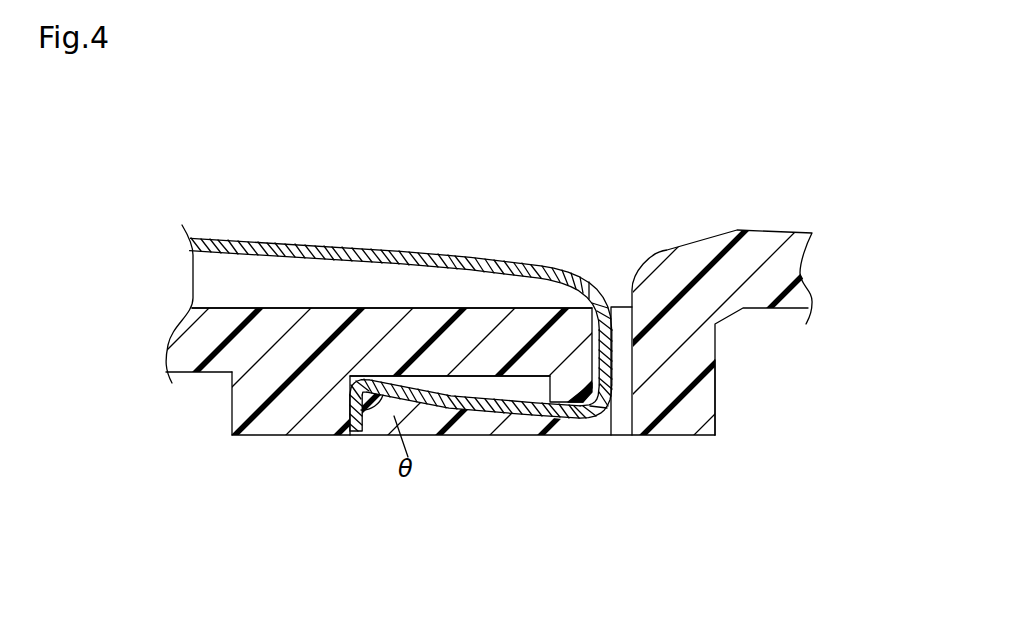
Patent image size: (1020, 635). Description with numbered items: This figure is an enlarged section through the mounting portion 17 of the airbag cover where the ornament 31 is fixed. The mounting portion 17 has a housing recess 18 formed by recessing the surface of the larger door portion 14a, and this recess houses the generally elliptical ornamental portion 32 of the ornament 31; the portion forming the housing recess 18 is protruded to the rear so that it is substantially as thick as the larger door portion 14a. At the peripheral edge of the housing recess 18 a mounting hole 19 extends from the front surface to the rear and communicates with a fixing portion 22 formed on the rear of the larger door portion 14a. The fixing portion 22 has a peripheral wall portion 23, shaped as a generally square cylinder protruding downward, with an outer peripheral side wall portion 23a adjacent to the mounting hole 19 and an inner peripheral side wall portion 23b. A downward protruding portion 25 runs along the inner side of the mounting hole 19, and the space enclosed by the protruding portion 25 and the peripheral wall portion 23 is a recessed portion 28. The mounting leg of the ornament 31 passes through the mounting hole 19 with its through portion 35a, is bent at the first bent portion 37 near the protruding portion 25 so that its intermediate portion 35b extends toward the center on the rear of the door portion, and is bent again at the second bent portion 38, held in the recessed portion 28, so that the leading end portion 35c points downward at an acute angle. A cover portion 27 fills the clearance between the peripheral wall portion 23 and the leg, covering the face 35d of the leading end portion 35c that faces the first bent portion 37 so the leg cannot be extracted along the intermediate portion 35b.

The larger door portion 14a is at (713, 245).
The mounting portion 17 is at (222, 440).
The housing recess 18 is at (515, 292).
The mounting hole 19 is at (621, 318).
The fixing portion 22 is at (530, 438).
The peripheral wall portion 23 is at (615, 439).
The outer peripheral side wall portion 23a is at (690, 425).
The inner peripheral side wall portion 23b is at (278, 426).
The protruding portion 25 is at (568, 388).
The cover portion 27 is at (432, 416).
The recessed portion 28 is at (485, 389).
The ornament 31 is at (238, 212).
The ornamental portion 32 is at (306, 247).
The through portion 35a is at (603, 345).
The intermediate portion 35b is at (513, 417).
The leading end portion 35c is at (357, 430).
The face 35d is at (367, 432).
The first bent portion 37 is at (598, 428).
The second bent portion 38 is at (373, 376).